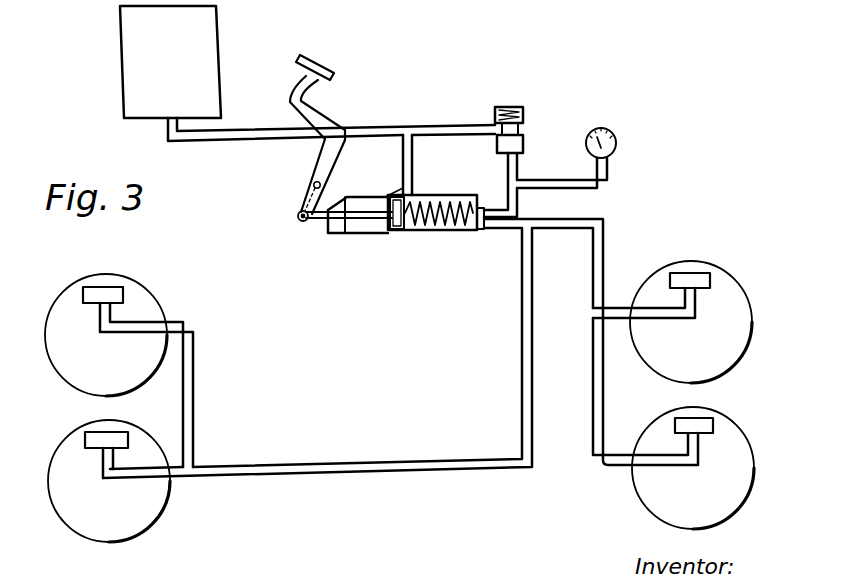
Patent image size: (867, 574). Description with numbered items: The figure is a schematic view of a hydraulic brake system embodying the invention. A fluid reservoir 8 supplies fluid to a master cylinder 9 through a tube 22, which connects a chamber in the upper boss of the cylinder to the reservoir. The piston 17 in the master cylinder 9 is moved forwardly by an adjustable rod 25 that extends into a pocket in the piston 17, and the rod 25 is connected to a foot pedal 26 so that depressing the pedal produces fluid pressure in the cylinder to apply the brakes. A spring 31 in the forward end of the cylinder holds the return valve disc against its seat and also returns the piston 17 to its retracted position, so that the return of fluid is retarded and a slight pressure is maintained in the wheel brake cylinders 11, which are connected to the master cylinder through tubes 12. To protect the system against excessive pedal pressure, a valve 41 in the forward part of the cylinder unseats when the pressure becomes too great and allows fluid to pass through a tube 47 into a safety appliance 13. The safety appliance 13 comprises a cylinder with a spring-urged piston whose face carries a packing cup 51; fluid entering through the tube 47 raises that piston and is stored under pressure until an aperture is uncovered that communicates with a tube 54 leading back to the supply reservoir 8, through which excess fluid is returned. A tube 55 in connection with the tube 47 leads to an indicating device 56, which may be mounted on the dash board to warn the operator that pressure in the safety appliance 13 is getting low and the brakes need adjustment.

The fluid reservoir 8 is at (135, 72).
The tube 54 is at (442, 130).
The tube 22 is at (408, 163).
The foot pedal 26 is at (325, 162).
The adjustable rod 25 is at (332, 218).
The master cylinder 9 is at (370, 232).
The spring 31 is at (423, 230).
The piston 17 is at (398, 230).
The valve 41 is at (480, 228).
The tube 47 is at (508, 193).
The safety appliance 13 is at (525, 142).
The packing cup 51 is at (522, 112).
The tube 55 is at (585, 187).
The indicating device 56 is at (613, 135).
The tubes 12 is at (525, 308).
The wheel brake cylinders 11 is at (118, 293).